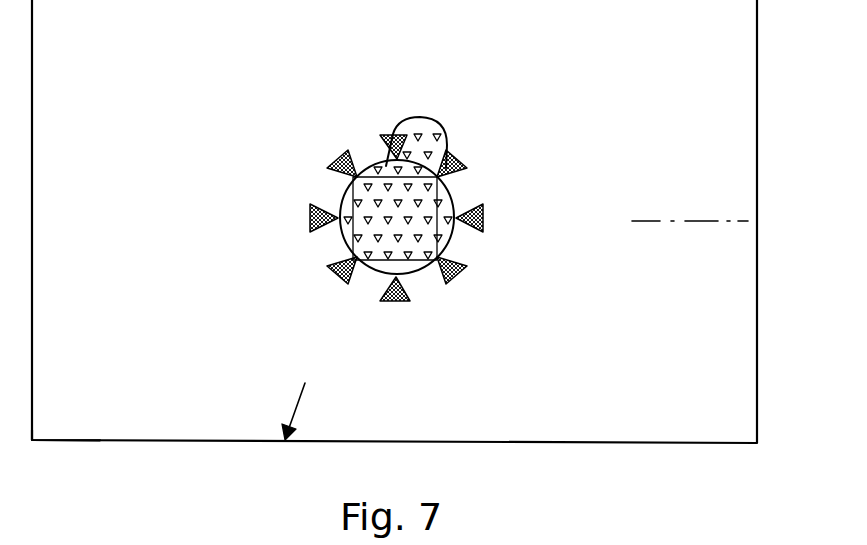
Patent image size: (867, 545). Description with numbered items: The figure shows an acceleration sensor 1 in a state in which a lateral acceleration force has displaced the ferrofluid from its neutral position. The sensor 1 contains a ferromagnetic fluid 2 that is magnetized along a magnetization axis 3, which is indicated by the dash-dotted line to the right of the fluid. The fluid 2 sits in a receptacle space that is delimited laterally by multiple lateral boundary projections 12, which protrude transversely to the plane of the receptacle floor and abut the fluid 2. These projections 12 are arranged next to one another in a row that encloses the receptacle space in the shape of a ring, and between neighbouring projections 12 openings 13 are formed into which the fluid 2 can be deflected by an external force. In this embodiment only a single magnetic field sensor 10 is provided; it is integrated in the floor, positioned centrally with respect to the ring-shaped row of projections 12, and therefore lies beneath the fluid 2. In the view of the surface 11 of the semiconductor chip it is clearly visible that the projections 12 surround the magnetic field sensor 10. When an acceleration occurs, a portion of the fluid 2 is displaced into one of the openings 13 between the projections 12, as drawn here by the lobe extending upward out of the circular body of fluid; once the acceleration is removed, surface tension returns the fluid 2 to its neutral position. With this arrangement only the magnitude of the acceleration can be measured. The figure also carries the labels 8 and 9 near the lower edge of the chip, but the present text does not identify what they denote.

The acceleration sensor 1 is at (546, 461).
The ferromagnetic fluid 2 is at (440, 122).
The magnetization axis 3 is at (698, 223).
The feed direction arrow 8 is at (283, 413).
The substrate edge 9 is at (148, 430).
The magnetic field sensor 10 is at (452, 203).
The surface of the semiconductor chip 11 is at (700, 427).
The lateral boundary projections 12 is at (340, 160).
The openings 13 is at (368, 145).